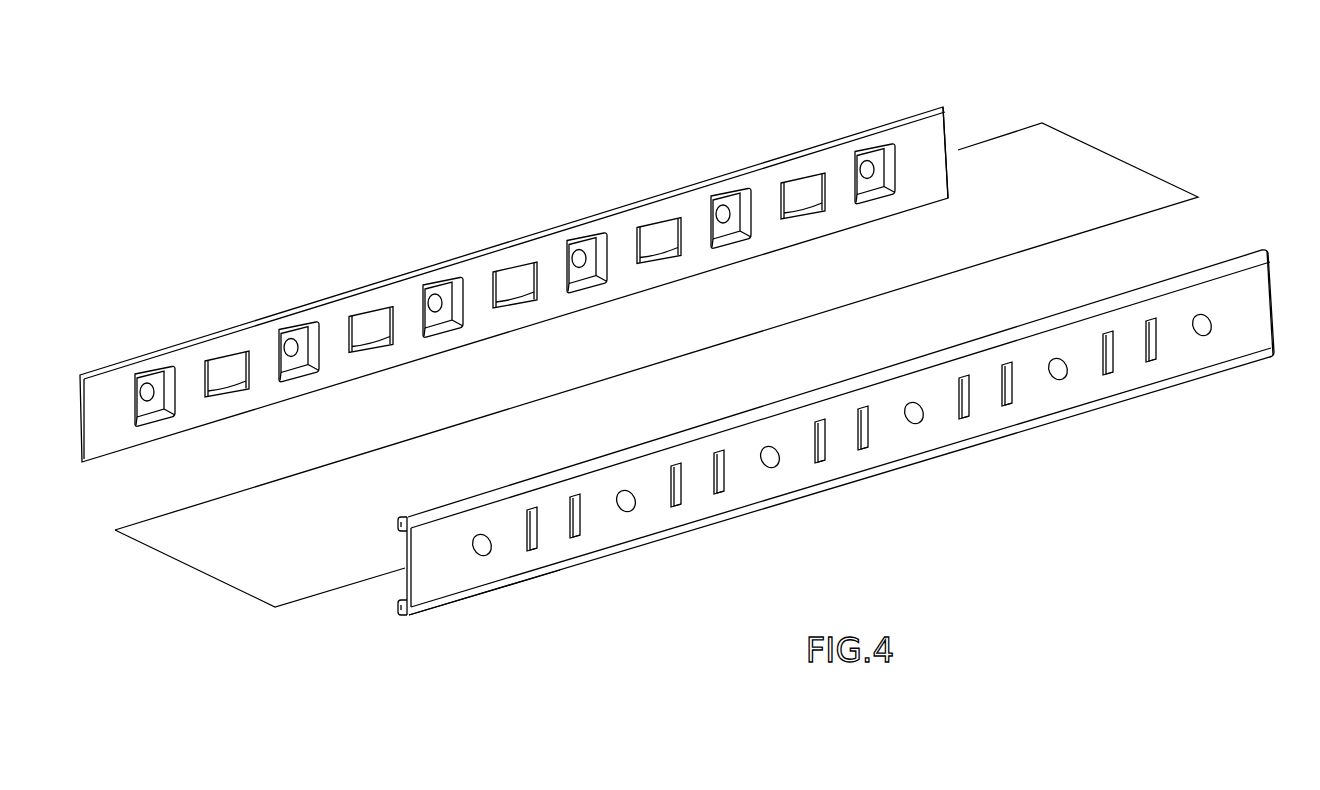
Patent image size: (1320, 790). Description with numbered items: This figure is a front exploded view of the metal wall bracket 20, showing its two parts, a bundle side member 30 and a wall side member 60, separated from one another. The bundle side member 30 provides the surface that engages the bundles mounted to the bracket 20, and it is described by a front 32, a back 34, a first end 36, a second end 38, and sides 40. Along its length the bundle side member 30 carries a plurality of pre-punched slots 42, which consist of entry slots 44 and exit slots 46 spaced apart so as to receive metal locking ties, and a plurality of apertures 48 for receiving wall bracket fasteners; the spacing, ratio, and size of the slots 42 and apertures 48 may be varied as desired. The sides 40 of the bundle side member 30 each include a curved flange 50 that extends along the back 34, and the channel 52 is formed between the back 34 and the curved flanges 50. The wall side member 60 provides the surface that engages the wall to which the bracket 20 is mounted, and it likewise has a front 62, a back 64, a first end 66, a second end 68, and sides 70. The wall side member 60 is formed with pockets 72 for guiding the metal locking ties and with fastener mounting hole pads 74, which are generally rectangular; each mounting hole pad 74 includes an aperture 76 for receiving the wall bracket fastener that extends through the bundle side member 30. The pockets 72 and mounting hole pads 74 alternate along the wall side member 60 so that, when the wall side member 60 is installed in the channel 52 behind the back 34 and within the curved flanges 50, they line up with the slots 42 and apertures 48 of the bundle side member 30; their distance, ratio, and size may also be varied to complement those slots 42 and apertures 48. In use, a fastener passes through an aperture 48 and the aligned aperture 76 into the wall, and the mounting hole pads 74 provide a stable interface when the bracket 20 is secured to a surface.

The metal wall bracket 20 is at (578, 139).
The bundle side member 30 is at (517, 567).
The front 32 is at (430, 600).
The back 34 is at (402, 578).
The first end 36 is at (398, 565).
The second end 38 is at (1262, 303).
The sides 40 is at (910, 360).
The pre-punched slots 42 is at (532, 510).
The entry slots 44 is at (580, 530).
The exit slots 46 is at (537, 543).
The apertures 48 is at (490, 548).
The curved flange 50 is at (398, 521).
The channel 52 is at (407, 541).
The wall side member 60 is at (340, 292).
The front 62 is at (762, 180).
The back 64 is at (878, 127).
The first end 66 is at (77, 412).
The second end 68 is at (950, 132).
The sides 70 is at (212, 332).
The pockets 72 is at (513, 270).
The fastener mounting hole pads 74 is at (450, 280).
The aperture 76 is at (442, 310).